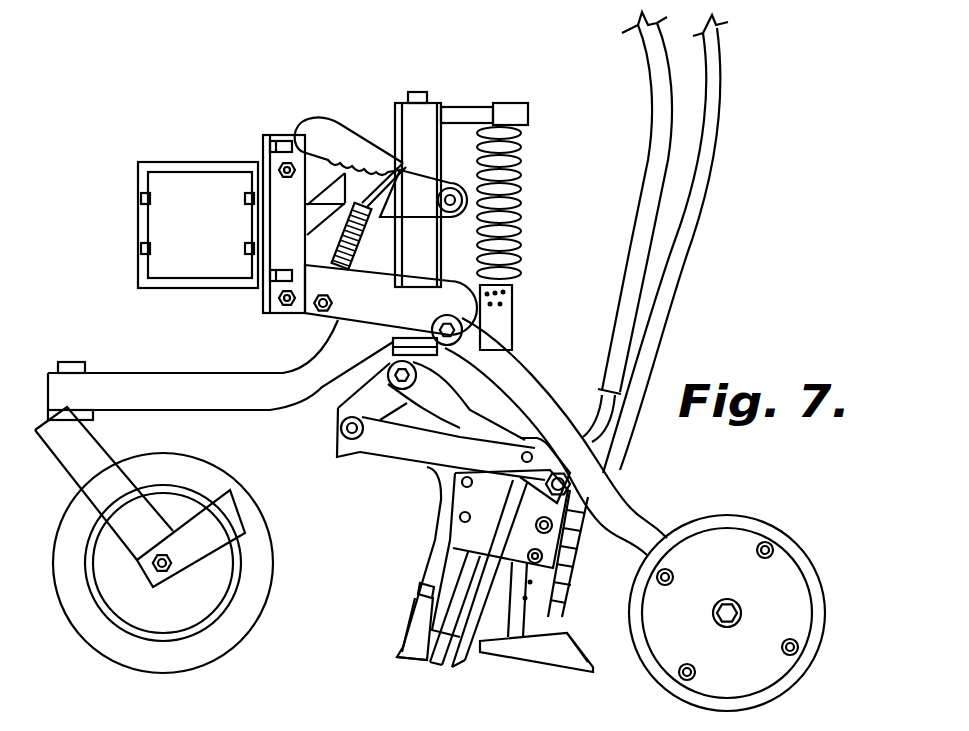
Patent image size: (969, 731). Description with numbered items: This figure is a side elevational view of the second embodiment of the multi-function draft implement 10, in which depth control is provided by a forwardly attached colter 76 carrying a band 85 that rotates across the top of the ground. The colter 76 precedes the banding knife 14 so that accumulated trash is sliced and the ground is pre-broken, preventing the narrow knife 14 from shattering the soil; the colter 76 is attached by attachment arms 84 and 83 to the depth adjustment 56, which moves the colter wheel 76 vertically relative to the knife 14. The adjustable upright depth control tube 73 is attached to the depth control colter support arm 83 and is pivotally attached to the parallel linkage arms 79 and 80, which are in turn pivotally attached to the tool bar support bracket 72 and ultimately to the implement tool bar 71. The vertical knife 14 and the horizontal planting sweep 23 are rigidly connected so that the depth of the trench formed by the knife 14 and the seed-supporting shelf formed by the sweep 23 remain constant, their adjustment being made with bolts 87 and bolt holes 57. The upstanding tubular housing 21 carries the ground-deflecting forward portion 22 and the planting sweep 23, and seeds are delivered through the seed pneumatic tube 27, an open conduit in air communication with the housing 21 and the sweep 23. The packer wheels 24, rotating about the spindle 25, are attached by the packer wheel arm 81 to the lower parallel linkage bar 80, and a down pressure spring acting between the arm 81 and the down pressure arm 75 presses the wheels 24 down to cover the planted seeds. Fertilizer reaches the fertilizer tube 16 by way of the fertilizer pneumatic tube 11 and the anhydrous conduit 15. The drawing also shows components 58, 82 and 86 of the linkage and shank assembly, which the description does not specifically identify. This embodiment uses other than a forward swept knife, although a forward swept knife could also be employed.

The multi-function draft implement 10 is at (399, 67).
The fertilizer pneumatic tube 11 is at (655, 130).
The banding knife 14 is at (412, 645).
The anhydrous conduit 15 is at (434, 660).
The fertilizer tube 16 is at (455, 665).
The tubular housing 21 is at (565, 603).
The ground-deflecting forward portion 22 is at (515, 622).
The planting sweep 23 is at (545, 655).
The packer wheels 24 is at (790, 540).
The spindle 25 is at (740, 613).
The seed pneumatic tube 27 is at (710, 155).
The depth adjustment 56 is at (420, 92).
The bolt holes 57 is at (526, 584).
The parallel linkage 58 is at (477, 452).
The implement tool bar 71 is at (192, 190).
The tool bar support bracket 72 is at (272, 135).
The adjustable upright depth control tube 73 is at (402, 120).
The down pressure arm 75 is at (490, 106).
The colter 76 is at (262, 602).
The parallel linkage arm 79 is at (414, 190).
The lower parallel linkage bar 80 is at (408, 296).
The packer wheel arm 81 is at (628, 518).
The shank 82 is at (446, 505).
The depth control colter support arm 83 is at (210, 378).
The attachment arm 84 is at (92, 458).
The band 85 is at (147, 633).
The wheel mounting plate 86 is at (225, 513).
The bolts 87 is at (543, 525).